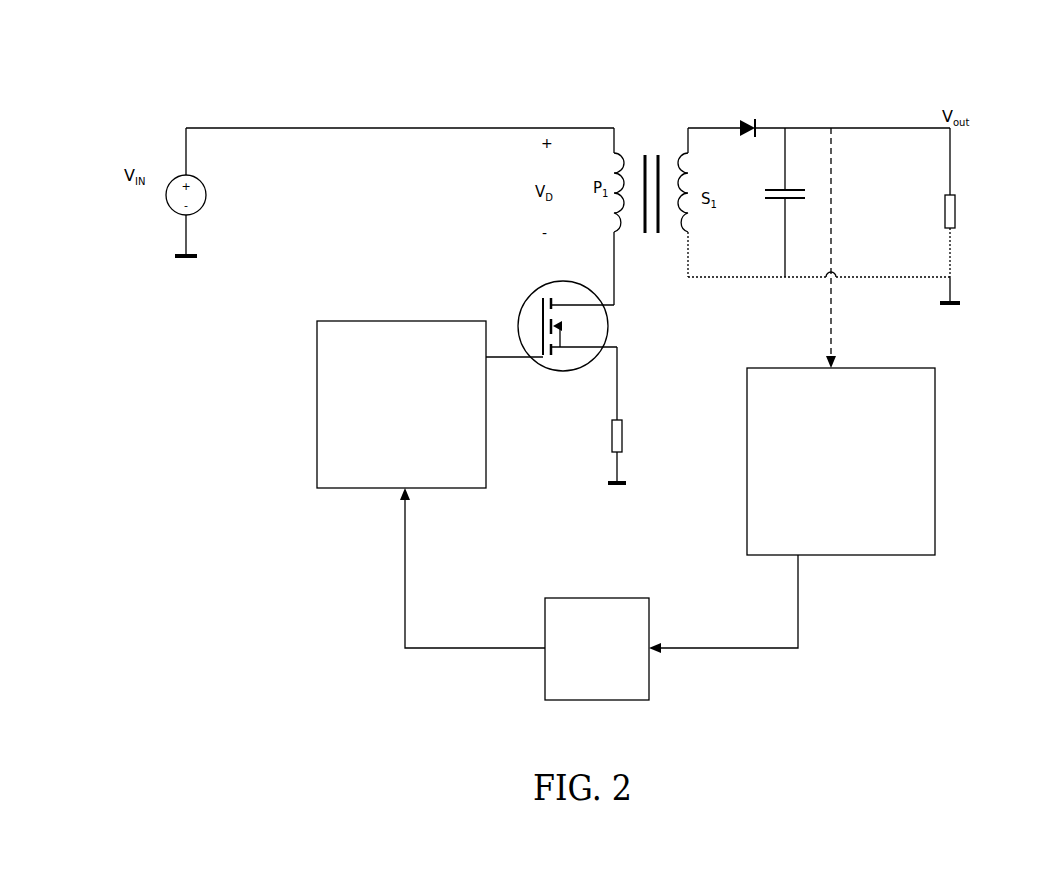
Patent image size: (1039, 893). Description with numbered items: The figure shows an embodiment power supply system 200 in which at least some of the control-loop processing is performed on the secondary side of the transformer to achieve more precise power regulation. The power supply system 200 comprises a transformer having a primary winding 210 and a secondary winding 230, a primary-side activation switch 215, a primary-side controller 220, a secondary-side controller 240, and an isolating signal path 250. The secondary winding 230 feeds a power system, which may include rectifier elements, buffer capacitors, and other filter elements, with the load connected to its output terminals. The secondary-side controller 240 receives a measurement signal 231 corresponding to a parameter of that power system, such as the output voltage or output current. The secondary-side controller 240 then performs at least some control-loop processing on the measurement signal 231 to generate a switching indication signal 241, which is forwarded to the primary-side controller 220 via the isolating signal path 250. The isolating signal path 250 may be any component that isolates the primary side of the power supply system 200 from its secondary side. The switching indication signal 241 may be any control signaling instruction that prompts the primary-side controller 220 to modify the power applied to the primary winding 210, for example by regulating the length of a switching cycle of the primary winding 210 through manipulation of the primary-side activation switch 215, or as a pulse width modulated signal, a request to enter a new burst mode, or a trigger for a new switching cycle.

The power supply system 200 is at (976, 70).
The primary winding 210 is at (617, 139).
The primary-side activation switch 215 is at (550, 370).
The primary-side controller 220 is at (343, 488).
The secondary winding 230 is at (690, 133).
The measurement signal 231 is at (822, 327).
The secondary-side controller 240 is at (935, 427).
The switching indication signal 241 is at (405, 605).
The isolating signal path 250 is at (648, 688).